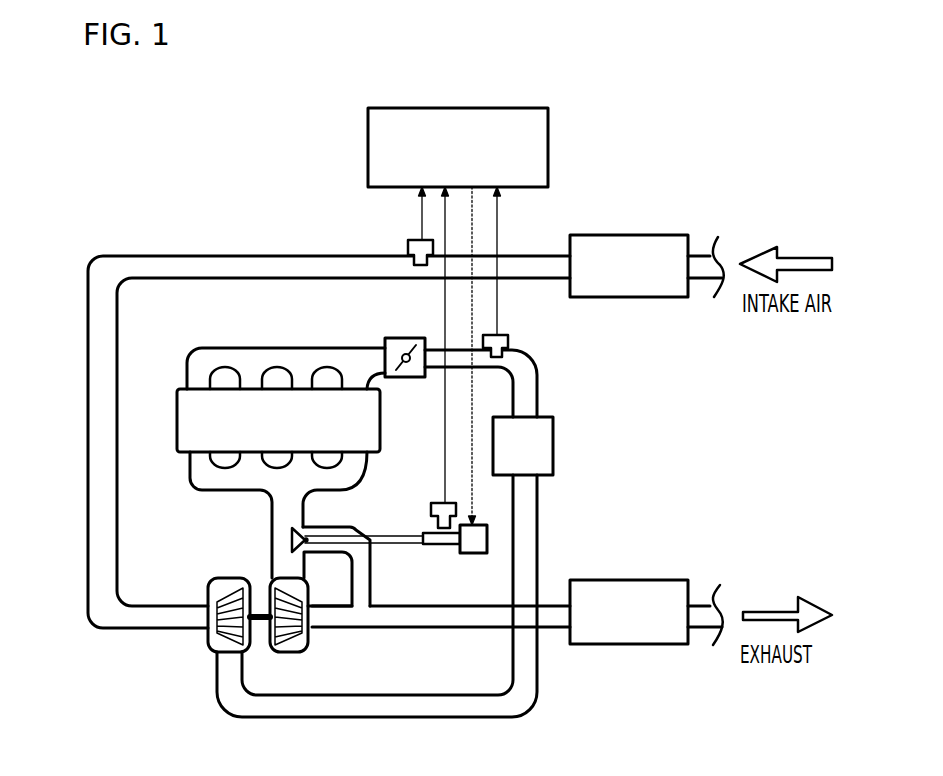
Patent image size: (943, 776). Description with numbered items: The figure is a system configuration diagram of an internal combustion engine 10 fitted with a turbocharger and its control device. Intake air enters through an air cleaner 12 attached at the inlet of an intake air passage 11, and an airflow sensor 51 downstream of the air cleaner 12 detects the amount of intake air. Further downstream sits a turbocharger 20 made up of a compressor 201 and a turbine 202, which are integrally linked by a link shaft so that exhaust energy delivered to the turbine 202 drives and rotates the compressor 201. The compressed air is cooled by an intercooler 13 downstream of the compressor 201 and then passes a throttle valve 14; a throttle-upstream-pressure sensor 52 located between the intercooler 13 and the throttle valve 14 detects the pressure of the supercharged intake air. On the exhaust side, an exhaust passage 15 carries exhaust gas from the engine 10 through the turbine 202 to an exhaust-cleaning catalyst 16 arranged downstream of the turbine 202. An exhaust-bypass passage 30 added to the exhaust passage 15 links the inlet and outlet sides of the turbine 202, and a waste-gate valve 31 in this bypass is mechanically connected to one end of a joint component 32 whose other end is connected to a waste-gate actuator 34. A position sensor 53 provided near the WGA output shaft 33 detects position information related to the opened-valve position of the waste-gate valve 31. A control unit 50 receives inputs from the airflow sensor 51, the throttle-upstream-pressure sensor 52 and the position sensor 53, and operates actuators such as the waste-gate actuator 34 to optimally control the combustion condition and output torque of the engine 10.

The internal combustion engine 10 is at (177, 427).
The intake air passage 11 is at (327, 253).
The air cleaner 12 is at (613, 235).
The intercooler 13 is at (553, 448).
The throttle valve 14 is at (400, 337).
The exhaust passage 15 is at (425, 628).
The exhaust-cleaning catalyst 16 is at (613, 582).
The turbocharger 20 is at (213, 656).
The compressor 201 is at (208, 650).
The turbine 202 is at (292, 652).
The exhaust-bypass passage 30 is at (373, 580).
The waste-gate valve 31 is at (290, 540).
The joint component 32 is at (387, 532).
The WGA output shaft 33 is at (447, 547).
The waste-gate actuator 34 is at (468, 553).
The control unit 50 is at (367, 146).
The airflow sensor 51 is at (408, 240).
The throttle-upstream-pressure sensor 52 is at (510, 335).
The position sensor 53 is at (430, 503).